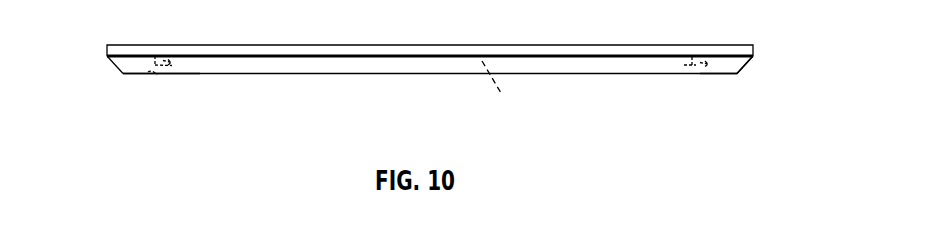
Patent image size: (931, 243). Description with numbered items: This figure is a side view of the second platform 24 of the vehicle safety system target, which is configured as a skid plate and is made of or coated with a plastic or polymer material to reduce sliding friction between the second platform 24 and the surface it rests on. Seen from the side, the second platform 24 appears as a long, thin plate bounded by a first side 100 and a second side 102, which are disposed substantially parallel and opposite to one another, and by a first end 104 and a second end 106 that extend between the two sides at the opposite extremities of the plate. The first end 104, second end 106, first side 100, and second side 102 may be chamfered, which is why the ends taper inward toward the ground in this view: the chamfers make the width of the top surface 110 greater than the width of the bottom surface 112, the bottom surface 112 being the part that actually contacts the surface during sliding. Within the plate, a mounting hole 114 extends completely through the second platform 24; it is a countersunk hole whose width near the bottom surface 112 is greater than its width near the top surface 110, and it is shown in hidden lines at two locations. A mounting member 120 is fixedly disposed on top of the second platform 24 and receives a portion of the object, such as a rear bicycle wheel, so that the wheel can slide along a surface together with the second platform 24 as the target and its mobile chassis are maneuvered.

The second platform 24 is at (741, 79).
The first side 100 is at (570, 59).
The second side 102 is at (500, 91).
The first end 104 is at (749, 62).
The second end 106 is at (118, 67).
The top surface 110 is at (138, 56).
The bottom surface 112 is at (133, 76).
The mounting hole 114 is at (157, 75).
The mounting member 120 is at (757, 38).